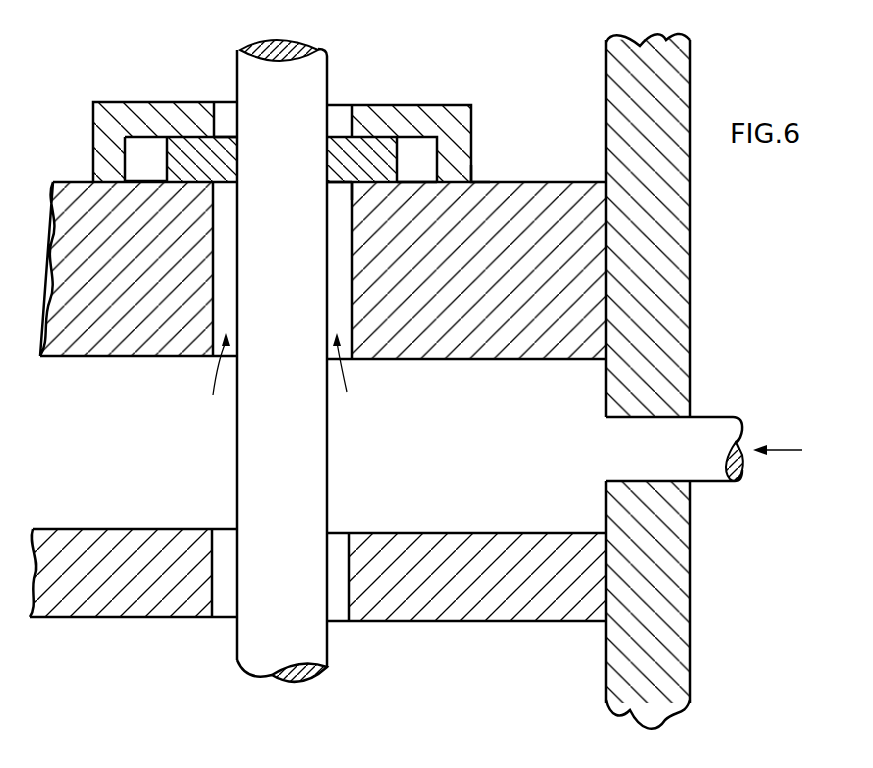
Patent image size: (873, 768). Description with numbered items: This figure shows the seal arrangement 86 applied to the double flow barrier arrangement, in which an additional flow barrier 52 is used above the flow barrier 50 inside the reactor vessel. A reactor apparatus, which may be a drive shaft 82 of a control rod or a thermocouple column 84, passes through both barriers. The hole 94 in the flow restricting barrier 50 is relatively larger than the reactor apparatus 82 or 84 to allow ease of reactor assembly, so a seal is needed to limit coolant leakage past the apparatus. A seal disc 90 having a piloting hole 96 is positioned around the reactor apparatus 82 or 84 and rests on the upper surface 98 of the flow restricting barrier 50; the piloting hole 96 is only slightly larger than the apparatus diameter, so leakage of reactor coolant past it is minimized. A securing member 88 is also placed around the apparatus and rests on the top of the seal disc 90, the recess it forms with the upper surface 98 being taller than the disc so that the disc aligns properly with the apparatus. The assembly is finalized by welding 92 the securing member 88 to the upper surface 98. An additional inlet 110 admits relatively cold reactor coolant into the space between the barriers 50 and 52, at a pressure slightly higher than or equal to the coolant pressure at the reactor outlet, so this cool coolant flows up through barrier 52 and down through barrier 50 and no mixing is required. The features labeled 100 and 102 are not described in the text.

The flow barrier 50 is at (470, 534).
The additional flow barrier 52 is at (467, 354).
The drive shaft 82 is at (313, 58).
The thermocouple column 84 is at (317, 351).
The seal 86 is at (429, 147).
The securing member 88 is at (443, 108).
The seal disc 90 is at (383, 143).
The welding 92 is at (472, 182).
The hole 94 is at (348, 353).
The piloting hole 96 is at (342, 140).
The upper surface 98 is at (140, 157).
The recess 100 is at (122, 181).
The inner edge of housing 102 is at (363, 187).
The additional inlet 110 is at (710, 425).